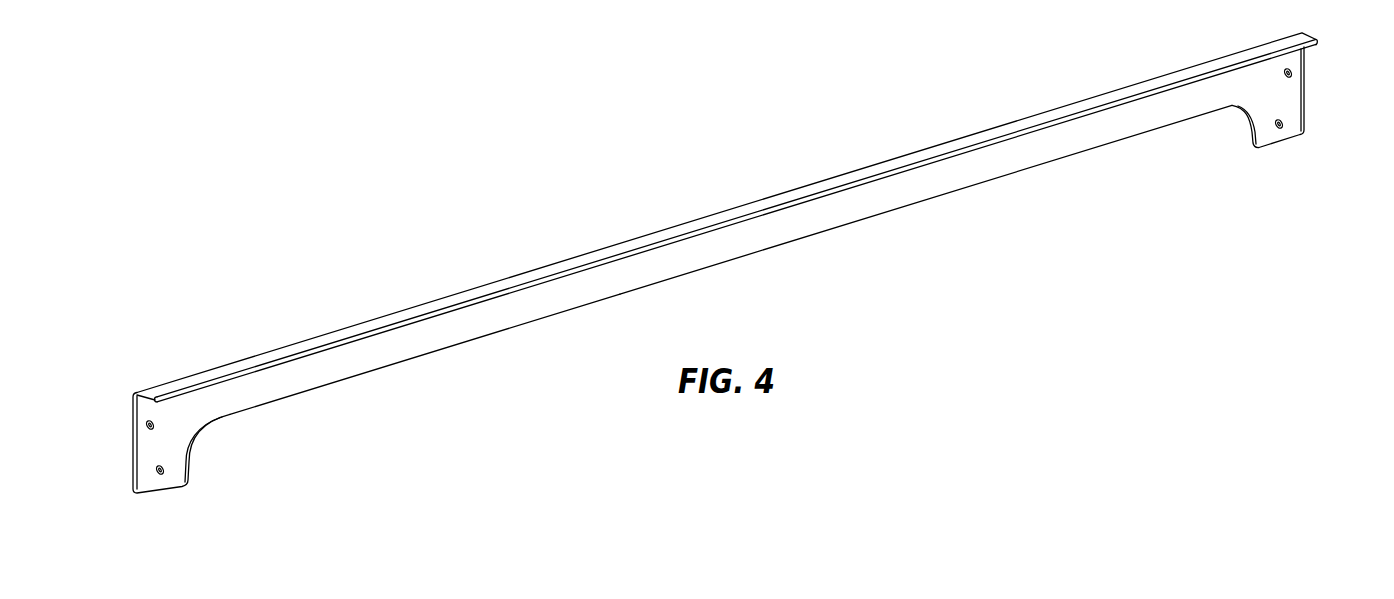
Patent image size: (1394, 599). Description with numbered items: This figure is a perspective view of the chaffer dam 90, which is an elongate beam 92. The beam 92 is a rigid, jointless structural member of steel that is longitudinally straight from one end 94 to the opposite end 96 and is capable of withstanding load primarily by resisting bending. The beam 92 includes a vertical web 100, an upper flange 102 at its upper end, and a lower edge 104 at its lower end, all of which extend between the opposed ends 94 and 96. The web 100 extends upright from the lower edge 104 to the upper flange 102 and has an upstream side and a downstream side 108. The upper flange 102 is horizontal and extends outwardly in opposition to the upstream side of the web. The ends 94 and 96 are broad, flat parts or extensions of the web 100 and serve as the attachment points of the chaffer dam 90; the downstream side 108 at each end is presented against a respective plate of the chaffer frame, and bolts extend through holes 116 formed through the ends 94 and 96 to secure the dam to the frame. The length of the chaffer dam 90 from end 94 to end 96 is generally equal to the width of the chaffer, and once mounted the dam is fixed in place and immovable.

The chaffer dam 90 is at (709, 283).
The elongate beam 92 is at (731, 259).
The end 94 is at (148, 457).
The end 96 is at (1290, 102).
The vertical web 100 is at (678, 263).
The upper flange 102 is at (550, 271).
The lower edge 104 is at (845, 227).
The downstream side 108 is at (462, 335).
The holes 116 is at (147, 422).